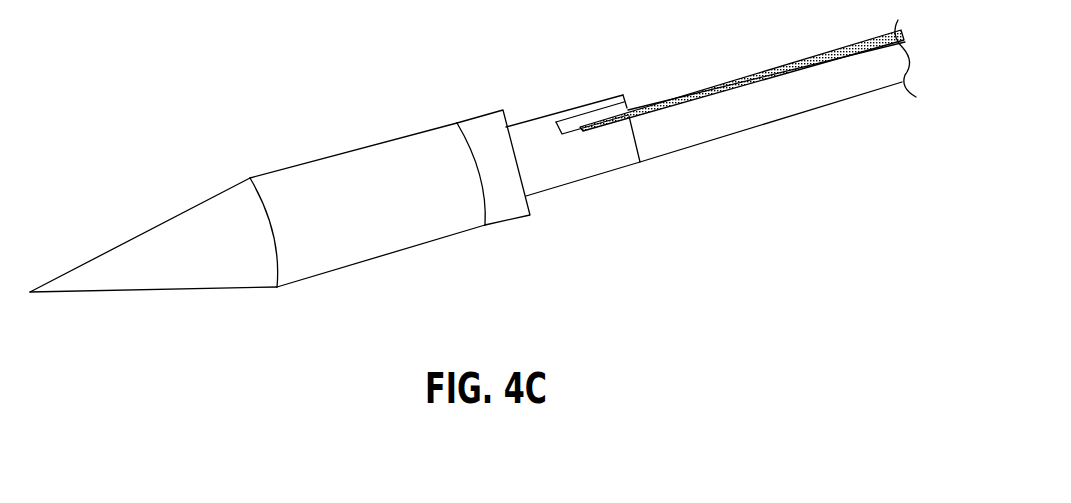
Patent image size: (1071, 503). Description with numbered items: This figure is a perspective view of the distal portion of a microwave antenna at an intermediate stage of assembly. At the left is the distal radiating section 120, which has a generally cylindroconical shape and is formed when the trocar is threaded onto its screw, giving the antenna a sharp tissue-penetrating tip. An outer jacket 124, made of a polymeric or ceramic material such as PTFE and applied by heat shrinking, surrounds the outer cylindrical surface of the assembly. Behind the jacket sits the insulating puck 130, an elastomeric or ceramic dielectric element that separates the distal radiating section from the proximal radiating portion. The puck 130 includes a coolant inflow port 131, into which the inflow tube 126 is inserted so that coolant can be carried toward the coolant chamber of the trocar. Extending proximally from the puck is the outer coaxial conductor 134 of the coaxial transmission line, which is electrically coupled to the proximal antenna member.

The distal radiating section 120 is at (151, 229).
The outer jacket 124 is at (367, 144).
The inflow tube 126 is at (781, 66).
The insulating puck 130 is at (478, 116).
The coolant inflow port 131 is at (590, 120).
The outer coaxial conductor 134 is at (757, 108).